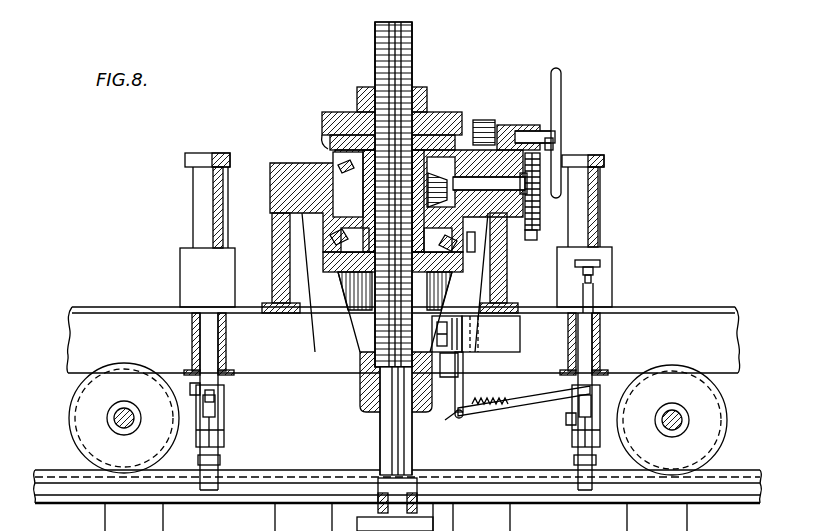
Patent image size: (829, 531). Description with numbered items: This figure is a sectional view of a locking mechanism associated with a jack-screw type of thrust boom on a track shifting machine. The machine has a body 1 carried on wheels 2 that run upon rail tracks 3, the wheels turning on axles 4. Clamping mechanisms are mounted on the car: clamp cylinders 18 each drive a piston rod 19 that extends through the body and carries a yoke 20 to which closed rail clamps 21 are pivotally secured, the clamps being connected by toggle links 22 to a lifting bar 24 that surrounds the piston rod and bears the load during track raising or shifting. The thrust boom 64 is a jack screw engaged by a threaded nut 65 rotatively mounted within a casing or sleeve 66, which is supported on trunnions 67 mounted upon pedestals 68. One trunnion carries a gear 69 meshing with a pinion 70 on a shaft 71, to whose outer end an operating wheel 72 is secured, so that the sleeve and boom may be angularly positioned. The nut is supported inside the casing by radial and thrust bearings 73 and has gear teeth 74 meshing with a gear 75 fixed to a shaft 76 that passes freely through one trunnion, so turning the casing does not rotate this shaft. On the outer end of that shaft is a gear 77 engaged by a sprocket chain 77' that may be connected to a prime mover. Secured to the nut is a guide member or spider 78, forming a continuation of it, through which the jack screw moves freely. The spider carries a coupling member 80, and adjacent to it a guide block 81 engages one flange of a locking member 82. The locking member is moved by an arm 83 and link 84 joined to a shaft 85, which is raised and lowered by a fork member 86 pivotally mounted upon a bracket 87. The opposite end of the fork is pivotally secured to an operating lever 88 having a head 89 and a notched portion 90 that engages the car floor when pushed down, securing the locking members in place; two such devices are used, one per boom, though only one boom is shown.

The body 1 is at (145, 309).
The wheels 2 is at (68, 419).
The rail tracks 3 is at (297, 468).
The axles 4 is at (130, 412).
The clamp cylinders 18 is at (193, 200).
The piston rod 19 is at (214, 418).
The yoke 20 is at (225, 438).
The rail clamps 21 is at (220, 462).
The toggle links 22 is at (196, 389).
The lifting bar 24 is at (215, 398).
The thrust boom 64 is at (413, 36).
The threaded nut 65 is at (363, 205).
The casing or sleeve 66 is at (322, 146).
The trunnions 67 is at (270, 178).
The pedestals 68 is at (272, 238).
The gear 69 is at (481, 246).
The pinion 70 is at (484, 119).
The shaft 71 is at (515, 128).
The operating wheel 72 is at (562, 106).
The radial and thrust bearings 73 is at (345, 108).
The gear teeth 74 is at (345, 179).
The gear 75 is at (477, 212).
The shaft 76 is at (554, 141).
The gear 77 is at (545, 191).
The sprocket chain 77' is at (540, 247).
The guide member or spider 78 is at (358, 338).
The coupling member 80 is at (452, 314).
The guide block 81 is at (508, 340).
The locking member 82 is at (454, 392).
The arm 83 is at (466, 376).
The link 84 is at (446, 421).
The shaft 85 is at (459, 420).
The fork member 86 is at (500, 412).
The bracket 87 is at (527, 391).
The operating lever or link 88 is at (603, 337).
The head 89 is at (601, 258).
The notched portion 90 is at (582, 282).